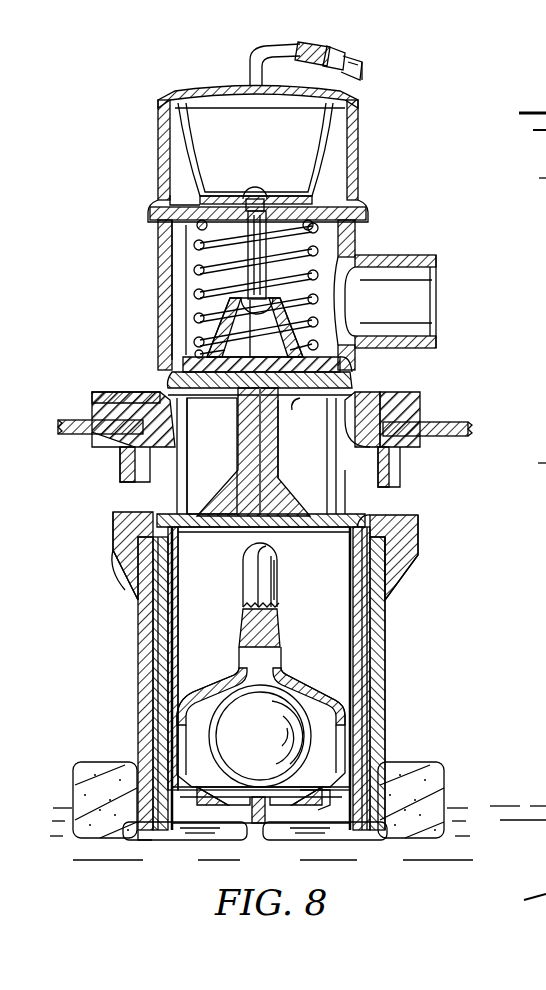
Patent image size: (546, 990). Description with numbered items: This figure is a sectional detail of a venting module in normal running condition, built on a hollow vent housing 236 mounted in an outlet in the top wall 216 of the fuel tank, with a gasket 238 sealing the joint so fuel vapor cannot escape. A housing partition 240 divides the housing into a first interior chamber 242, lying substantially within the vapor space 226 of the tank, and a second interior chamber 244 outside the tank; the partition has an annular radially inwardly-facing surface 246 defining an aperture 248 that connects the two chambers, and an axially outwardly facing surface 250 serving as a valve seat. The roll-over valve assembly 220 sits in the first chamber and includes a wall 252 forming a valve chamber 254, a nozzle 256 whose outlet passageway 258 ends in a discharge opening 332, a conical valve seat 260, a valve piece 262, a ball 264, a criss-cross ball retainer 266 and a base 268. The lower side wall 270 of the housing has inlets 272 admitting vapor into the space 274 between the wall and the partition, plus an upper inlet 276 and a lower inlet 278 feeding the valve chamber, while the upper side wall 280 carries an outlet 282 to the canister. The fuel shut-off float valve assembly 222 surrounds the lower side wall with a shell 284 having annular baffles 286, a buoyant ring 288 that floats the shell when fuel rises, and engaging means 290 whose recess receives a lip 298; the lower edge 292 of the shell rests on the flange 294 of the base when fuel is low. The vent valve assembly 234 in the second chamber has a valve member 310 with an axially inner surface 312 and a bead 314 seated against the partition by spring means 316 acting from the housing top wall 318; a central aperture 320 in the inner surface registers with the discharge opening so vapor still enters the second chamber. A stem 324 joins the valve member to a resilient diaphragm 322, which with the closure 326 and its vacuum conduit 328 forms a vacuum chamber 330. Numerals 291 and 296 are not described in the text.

The top wall 216 is at (448, 422).
The roll-over valve assembly 220 is at (405, 697).
The fuel shut-off float valve assembly 222 is at (137, 660).
The vapor space 226 is at (76, 448).
The vent valve assembly 234 is at (327, 277).
The vent housing 236 is at (122, 325).
The gasket 238 is at (95, 420).
The housing partition 240 is at (318, 395).
The first interior chamber 242 is at (352, 494).
The second interior chamber 244 is at (190, 333).
The annular radially inwardly-facing surface 246 is at (210, 402).
The aperture 248 is at (315, 456).
The axially outwardly facing surface 250 is at (180, 372).
The wall 252 is at (190, 527).
The valve chamber 254 is at (225, 608).
The nozzle 256 is at (278, 482).
The outlet passageway 258 is at (257, 463).
The conical valve seat 260 is at (262, 524).
The valve piece 262 is at (297, 667).
The ball 264 is at (274, 741).
The criss-cross ball retainer 266 is at (286, 815).
The base 268 is at (335, 832).
The lower side wall 270 is at (226, 469).
The inlets 272 is at (98, 492).
The space 274 is at (170, 503).
The upper inlet 276 is at (352, 552).
The lower inlet 278 is at (362, 792).
The upper side wall 280 is at (168, 293).
The outlet 282 is at (420, 258).
The shell 284 is at (378, 623).
The baffles 286 is at (372, 655).
The buoyant ring 288 is at (437, 764).
The engaging means 290 is at (412, 555).
The lip 291 is at (375, 516).
The lower edge 292 is at (143, 840).
The flange 294 is at (176, 835).
The gap 296 is at (372, 524).
The lip 298 is at (395, 466).
The valve member 310 is at (345, 366).
The axially inner surface 312 is at (350, 386).
The bead 314 is at (420, 393).
The spring means 316 is at (196, 244).
The top wall 318 is at (190, 195).
The central aperture 320 is at (262, 372).
The resilient diaphragm 322 is at (198, 167).
The stem 324 is at (262, 288).
The closure 326 is at (222, 88).
The vacuum conduit 328 is at (271, 52).
The vacuum chamber 330 is at (300, 152).
The discharge opening 332 is at (242, 375).